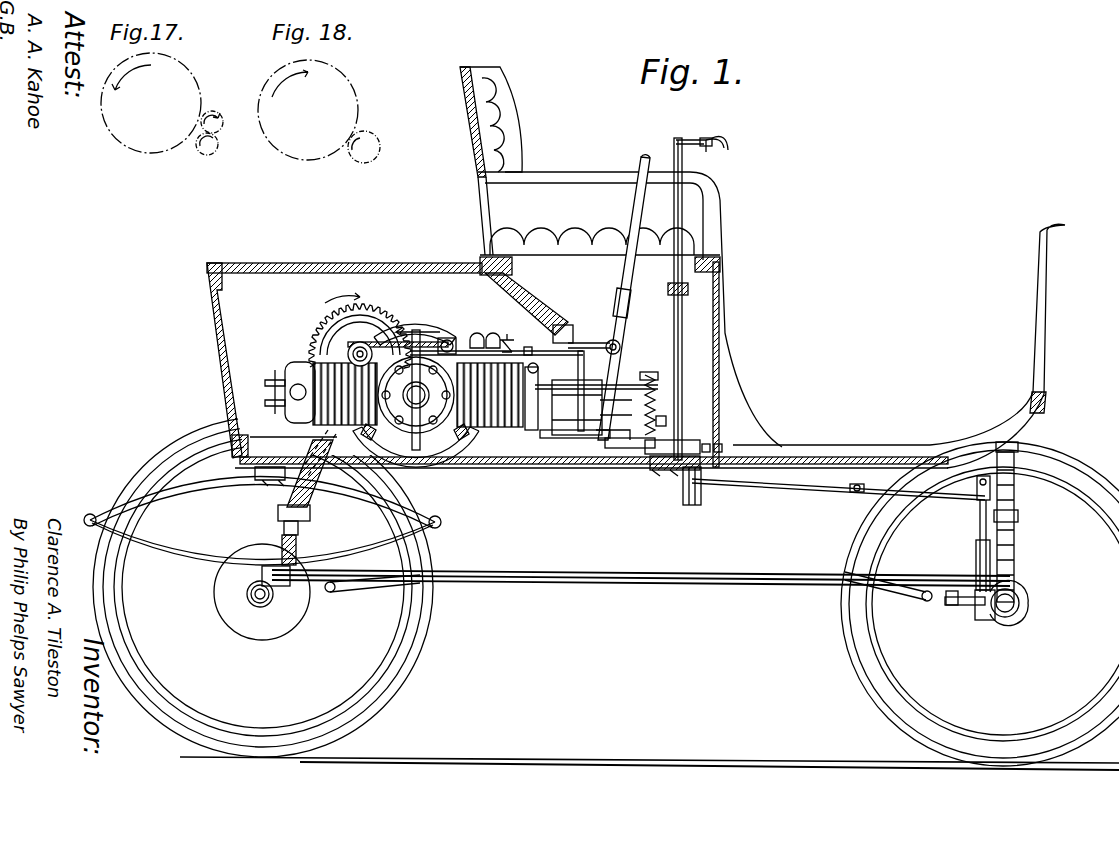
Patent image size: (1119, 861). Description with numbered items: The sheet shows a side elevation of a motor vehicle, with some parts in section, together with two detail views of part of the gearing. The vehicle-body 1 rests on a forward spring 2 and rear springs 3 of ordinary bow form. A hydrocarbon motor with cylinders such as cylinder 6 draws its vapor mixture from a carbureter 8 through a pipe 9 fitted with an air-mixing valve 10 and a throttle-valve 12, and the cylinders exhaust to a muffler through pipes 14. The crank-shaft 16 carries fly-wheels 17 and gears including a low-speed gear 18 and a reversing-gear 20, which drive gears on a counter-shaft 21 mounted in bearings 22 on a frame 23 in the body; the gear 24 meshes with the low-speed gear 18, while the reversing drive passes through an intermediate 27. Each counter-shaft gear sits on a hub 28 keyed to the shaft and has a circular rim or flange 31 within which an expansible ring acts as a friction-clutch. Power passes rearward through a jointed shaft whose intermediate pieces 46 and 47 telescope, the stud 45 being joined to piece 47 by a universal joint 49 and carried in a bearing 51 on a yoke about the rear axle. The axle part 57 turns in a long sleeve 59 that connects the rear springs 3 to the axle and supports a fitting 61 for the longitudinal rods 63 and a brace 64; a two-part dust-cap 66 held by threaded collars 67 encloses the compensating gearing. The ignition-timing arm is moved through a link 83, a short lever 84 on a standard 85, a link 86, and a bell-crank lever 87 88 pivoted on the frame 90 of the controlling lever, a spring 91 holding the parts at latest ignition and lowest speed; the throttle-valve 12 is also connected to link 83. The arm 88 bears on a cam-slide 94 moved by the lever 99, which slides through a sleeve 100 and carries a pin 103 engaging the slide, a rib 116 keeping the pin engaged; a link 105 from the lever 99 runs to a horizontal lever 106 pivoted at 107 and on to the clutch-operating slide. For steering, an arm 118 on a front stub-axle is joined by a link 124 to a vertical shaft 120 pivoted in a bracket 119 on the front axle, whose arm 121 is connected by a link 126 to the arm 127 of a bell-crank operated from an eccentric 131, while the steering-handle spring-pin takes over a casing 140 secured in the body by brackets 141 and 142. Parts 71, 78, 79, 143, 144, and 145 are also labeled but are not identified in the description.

In FIG. 1, the vehicle-body 1 is at (210, 320).
In FIG. 1, the forward spring 2 is at (1018, 488).
In FIG. 1, the rear springs 3 is at (206, 488).
In FIG. 1, the cylinder 6 is at (298, 392).
In FIG. 1, the carbureter 8 is at (577, 407).
In FIG. 1, the pipe 9 is at (582, 354).
In FIG. 1, the air-mixing valve 10 is at (506, 326).
In FIG. 1, the throttle-valve 12 is at (470, 336).
In FIG. 1, the pipes 14 is at (372, 342).
In FIG. 1, the crank-shaft 16 is at (401, 390).
In FIG. 1, the fly-wheels 17 is at (436, 334).
In FIG. 18, the low-speed gear 18 is at (380, 146).
In FIG. 17, the reversing-gear 20 is at (216, 146).
In FIG. 1, the counter-shaft 21 is at (346, 352).
In FIG. 1, the bearings 22 is at (368, 348).
In FIG. 1, the frame 23 is at (452, 434).
In FIG. 18, the gear 24 is at (348, 82).
In FIG. 1, the gear 24 is at (336, 316).
In FIG. 17, the intermediate 27 is at (216, 114).
In FIG. 17, the hub 28 is at (190, 76).
In FIG. 1, the circular rim or flange 31 is at (328, 334).
In FIG. 1, the stud 45 is at (304, 536).
In FIG. 1, the intermediate piece 46 is at (322, 426).
In FIG. 1, the intermediate piece 47 is at (306, 502).
In FIG. 1, the universal joint 49 is at (312, 518).
In FIG. 1, the bearing 51 is at (290, 545).
In FIG. 1, the axle part 57 is at (252, 600).
In FIG. 1, the long sleeve 59 is at (268, 602).
In FIG. 1, the fitting 61 is at (262, 566).
In FIG. 1, the longitudinal rods 63 is at (686, 582).
In FIG. 1, the brace 64 is at (280, 538).
In FIG. 1, the two-part dust-cap 66 is at (262, 592).
In FIG. 1, the threaded collars 67 is at (262, 606).
In FIG. 1, the engine cylinder 71 is at (496, 420).
In FIG. 1, the pawl 78 is at (380, 432).
In FIG. 1, the valve 79 is at (452, 338).
In FIG. 1, the link 83 is at (528, 366).
In FIG. 1, the short lever 84 is at (540, 368).
In FIG. 1, the standard 85 is at (552, 438).
In FIG. 1, the link 86 is at (640, 372).
In FIG. 1, the bell-crank lever arm 87 is at (660, 390).
In FIG. 1, the bell-crank lever arm 88 is at (640, 430).
In FIG. 1, the frame 90 is at (620, 340).
In FIG. 1, the spring 91 is at (650, 382).
In FIG. 1, the cam-slide 94 is at (606, 430).
In FIG. 1, the lever 99 is at (632, 208).
In FIG. 1, the sleeve 100 is at (622, 292).
In FIG. 1, the pin 103 is at (612, 386).
In FIG. 1, the link 105 is at (604, 348).
In FIG. 1, the horizontal lever 106 is at (526, 348).
In FIG. 1, the pivot 107 is at (566, 328).
In FIG. 1, the rib 116 is at (668, 415).
In FIG. 1, the arm 118 is at (964, 604).
In FIG. 1, the bracket 119 is at (978, 566).
In FIG. 1, the vertical shaft 120 is at (980, 522).
In FIG. 1, the arm 121 is at (978, 489).
In FIG. 1, the link 124 is at (940, 600).
In FIG. 1, the link 126 is at (790, 496).
In FIG. 1, the arm 127 is at (698, 486).
In FIG. 1, the eccentric 131 is at (648, 458).
In FIG. 1, the casing 140 is at (686, 325).
In FIG. 1, the bracket 141 is at (672, 290).
In FIG. 1, the bracket 142 is at (696, 454).
In FIG. 1, the handle arm 143 is at (698, 138).
In FIG. 1, the handle sleeve 144 is at (714, 154).
In FIG. 1, the handle grip 145 is at (726, 145).